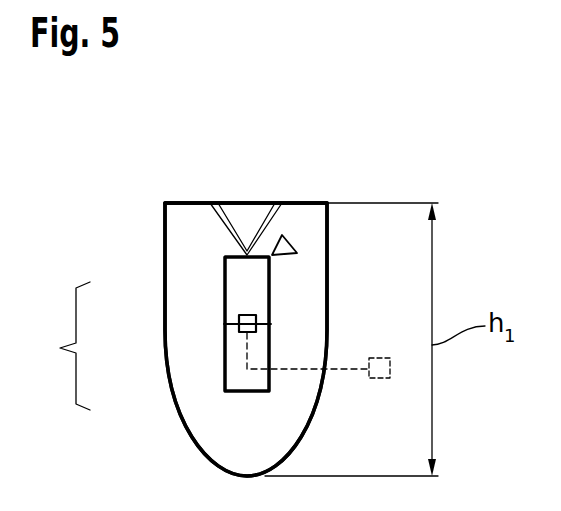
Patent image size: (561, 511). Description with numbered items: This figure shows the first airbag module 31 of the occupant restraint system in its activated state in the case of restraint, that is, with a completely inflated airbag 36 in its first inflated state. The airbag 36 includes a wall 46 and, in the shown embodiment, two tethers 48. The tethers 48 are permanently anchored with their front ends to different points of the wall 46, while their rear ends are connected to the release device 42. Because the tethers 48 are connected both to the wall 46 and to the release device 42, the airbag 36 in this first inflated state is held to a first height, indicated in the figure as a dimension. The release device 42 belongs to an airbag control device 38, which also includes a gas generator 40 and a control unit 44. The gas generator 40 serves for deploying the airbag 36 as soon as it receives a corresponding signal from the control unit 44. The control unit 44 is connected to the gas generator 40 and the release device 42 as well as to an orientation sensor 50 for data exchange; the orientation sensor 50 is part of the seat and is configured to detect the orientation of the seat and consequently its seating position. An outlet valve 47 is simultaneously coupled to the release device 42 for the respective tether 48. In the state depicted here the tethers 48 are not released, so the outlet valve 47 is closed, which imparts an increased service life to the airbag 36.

The first airbag module 31 is at (292, 143).
The airbag 36 is at (208, 426).
The airbag control device 38 is at (149, 333).
The gas generator 40 is at (237, 375).
The release device 42 is at (223, 280).
The control unit 44 is at (245, 332).
The wall 46 is at (197, 202).
The outlet valve 47 is at (275, 257).
The tether 48 is at (282, 216).
The orientation sensor 50 is at (375, 357).